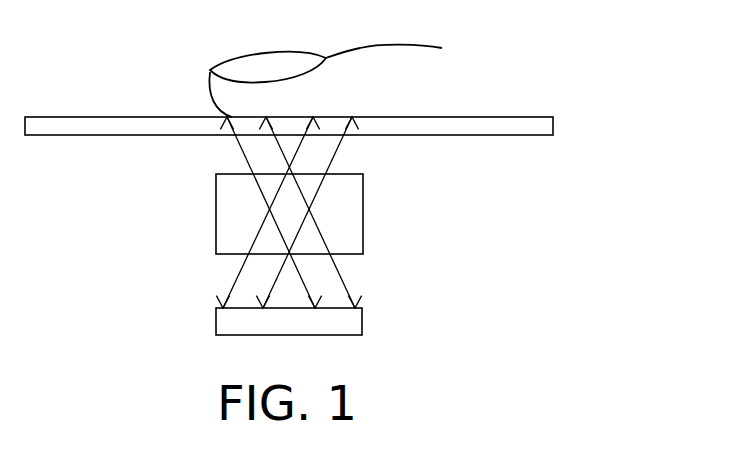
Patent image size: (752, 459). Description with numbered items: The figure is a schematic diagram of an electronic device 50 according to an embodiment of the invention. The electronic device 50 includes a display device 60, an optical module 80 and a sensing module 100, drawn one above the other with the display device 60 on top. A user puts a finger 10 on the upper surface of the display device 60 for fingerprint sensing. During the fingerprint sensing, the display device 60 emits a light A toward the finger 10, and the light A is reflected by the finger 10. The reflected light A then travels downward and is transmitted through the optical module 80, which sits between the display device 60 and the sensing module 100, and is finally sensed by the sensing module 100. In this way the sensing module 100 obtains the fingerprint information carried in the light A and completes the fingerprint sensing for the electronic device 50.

The finger 10 is at (248, 68).
The display device 60 is at (540, 126).
The light A is at (357, 127).
The optical module 80 is at (355, 213).
The sensing module 100 is at (353, 322).
The electronic device 50 is at (583, 237).